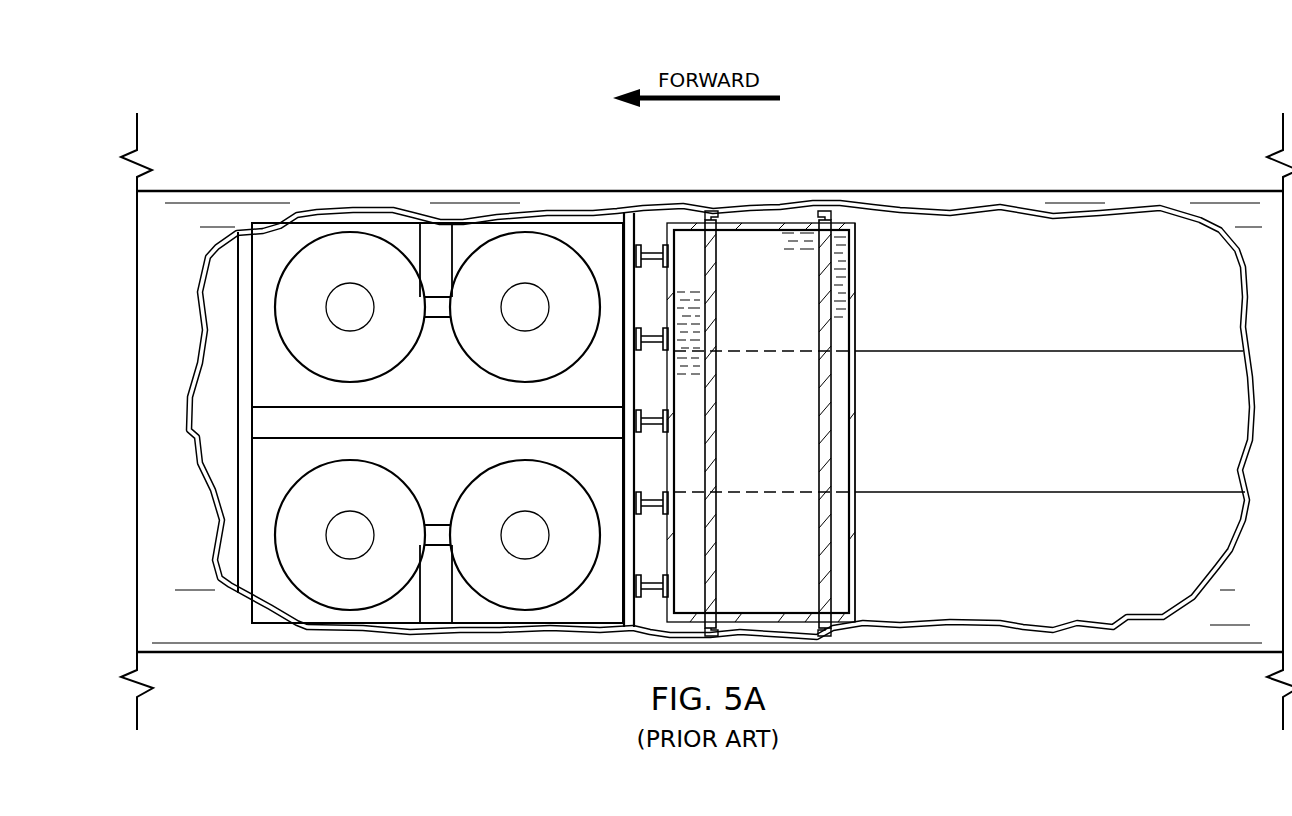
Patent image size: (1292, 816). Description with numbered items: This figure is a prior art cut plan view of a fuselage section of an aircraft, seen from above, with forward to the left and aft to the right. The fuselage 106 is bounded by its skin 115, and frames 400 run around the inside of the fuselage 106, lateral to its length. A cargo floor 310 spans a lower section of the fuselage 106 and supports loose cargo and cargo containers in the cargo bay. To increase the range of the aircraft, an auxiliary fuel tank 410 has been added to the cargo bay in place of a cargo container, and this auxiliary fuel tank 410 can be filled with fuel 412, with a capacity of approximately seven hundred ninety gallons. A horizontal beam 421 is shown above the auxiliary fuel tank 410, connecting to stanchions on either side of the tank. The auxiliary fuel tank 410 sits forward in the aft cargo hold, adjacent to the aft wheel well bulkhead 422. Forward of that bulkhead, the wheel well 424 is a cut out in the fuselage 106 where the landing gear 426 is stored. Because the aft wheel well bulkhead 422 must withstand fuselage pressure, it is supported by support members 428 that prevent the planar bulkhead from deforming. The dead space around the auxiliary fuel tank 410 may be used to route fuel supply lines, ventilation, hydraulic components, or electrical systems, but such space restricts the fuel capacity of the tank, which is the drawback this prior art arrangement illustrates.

The fuselage 106 is at (393, 141).
The skin 115 is at (933, 193).
The cargo floor 310 is at (1012, 349).
The frames 400 is at (733, 211).
The auxiliary fuel tank 410 is at (857, 268).
The fuel 412 is at (781, 436).
The horizontal beam 421 is at (818, 312).
The aft wheel well bulkhead 422 is at (622, 228).
The wheel well 424 is at (486, 618).
The landing gear 426 is at (320, 237).
The support members 428 is at (655, 244).